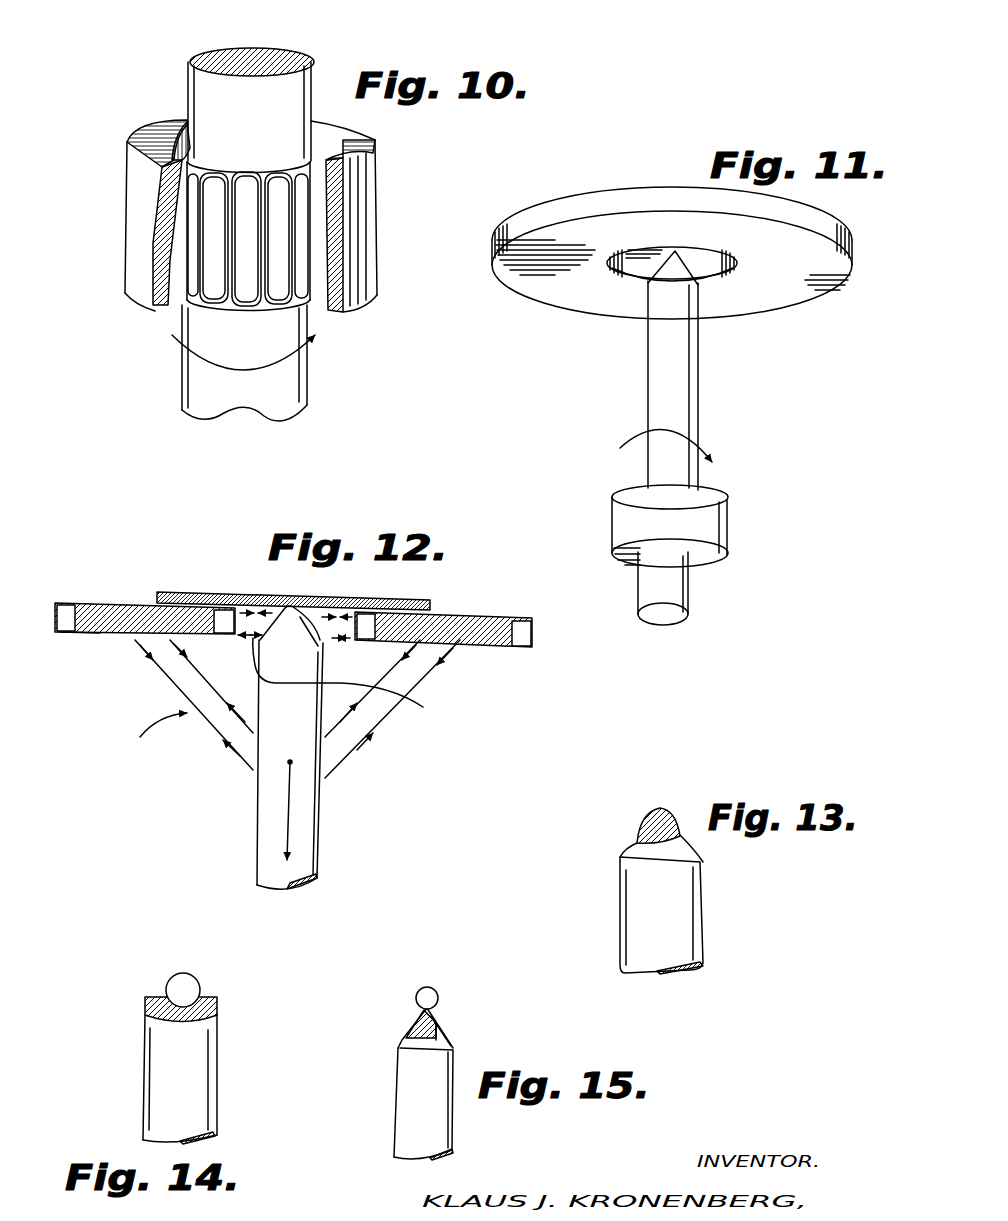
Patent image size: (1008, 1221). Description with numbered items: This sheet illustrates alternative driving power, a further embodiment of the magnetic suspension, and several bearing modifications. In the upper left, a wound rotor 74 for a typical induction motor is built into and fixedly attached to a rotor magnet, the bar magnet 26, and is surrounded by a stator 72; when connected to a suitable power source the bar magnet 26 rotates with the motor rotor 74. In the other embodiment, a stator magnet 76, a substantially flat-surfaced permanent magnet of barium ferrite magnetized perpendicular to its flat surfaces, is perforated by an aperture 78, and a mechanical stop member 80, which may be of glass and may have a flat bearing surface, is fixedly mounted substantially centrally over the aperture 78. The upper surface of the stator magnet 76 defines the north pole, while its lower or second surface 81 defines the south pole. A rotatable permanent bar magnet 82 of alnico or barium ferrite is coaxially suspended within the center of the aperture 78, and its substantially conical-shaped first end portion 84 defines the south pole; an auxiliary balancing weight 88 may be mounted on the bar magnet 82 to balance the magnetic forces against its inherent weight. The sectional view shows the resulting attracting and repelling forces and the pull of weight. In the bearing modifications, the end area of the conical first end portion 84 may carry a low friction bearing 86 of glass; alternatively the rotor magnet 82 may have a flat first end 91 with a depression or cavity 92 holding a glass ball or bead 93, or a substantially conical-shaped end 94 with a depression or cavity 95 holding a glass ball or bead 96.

In FIG. 10, the bar magnet 26 is at (207, 85).
In FIG. 10, the stator 72 is at (132, 170).
In FIG. 10, the wound rotor 74 is at (307, 168).
In FIG. 11, the stator magnet 76 is at (600, 197).
In FIG. 12, the stator magnet 76 is at (135, 603).
In FIG. 11, the aperture 78 is at (623, 277).
In FIG. 12, the aperture 78 is at (258, 617).
In FIG. 11, the mechanical stop member 80 is at (735, 268).
In FIG. 12, the mechanical stop member 80 is at (373, 600).
In FIG. 11, the lower or second surface 81 is at (541, 280).
In FIG. 12, the lower or second surface 81 is at (94, 634).
In FIG. 11, the rotatable permanent bar magnet 82 is at (698, 395).
In FIG. 12, the rotatable permanent bar magnet 82 is at (258, 812).
In FIG. 13, the rotatable permanent bar magnet 82 is at (697, 943).
In FIG. 14, the rotatable permanent bar magnet 82 is at (205, 1063).
In FIG. 15, the rotatable permanent bar magnet 82 is at (410, 1100).
In FIG. 11, the substantially conical-shaped first end portion 84 is at (688, 252).
In FIG. 12, the substantially conical-shaped first end portion 84 is at (287, 622).
In FIG. 13, the substantially conical-shaped first end portion 84 is at (637, 836).
In FIG. 13, the low friction bearing 86 is at (648, 812).
In FIG. 11, the auxiliary balancing weight 88 is at (728, 524).
In FIG. 14, the flat first end 91 is at (205, 1000).
In FIG. 14, the depression or cavity 92 is at (147, 1008).
In FIG. 14, the glass ball or bead 93 is at (166, 984).
In FIG. 15, the substantially conical-shaped end 94 is at (402, 1040).
In FIG. 15, the depression or cavity 95 is at (442, 1018).
In FIG. 15, the glass ball or bead 96 is at (438, 991).